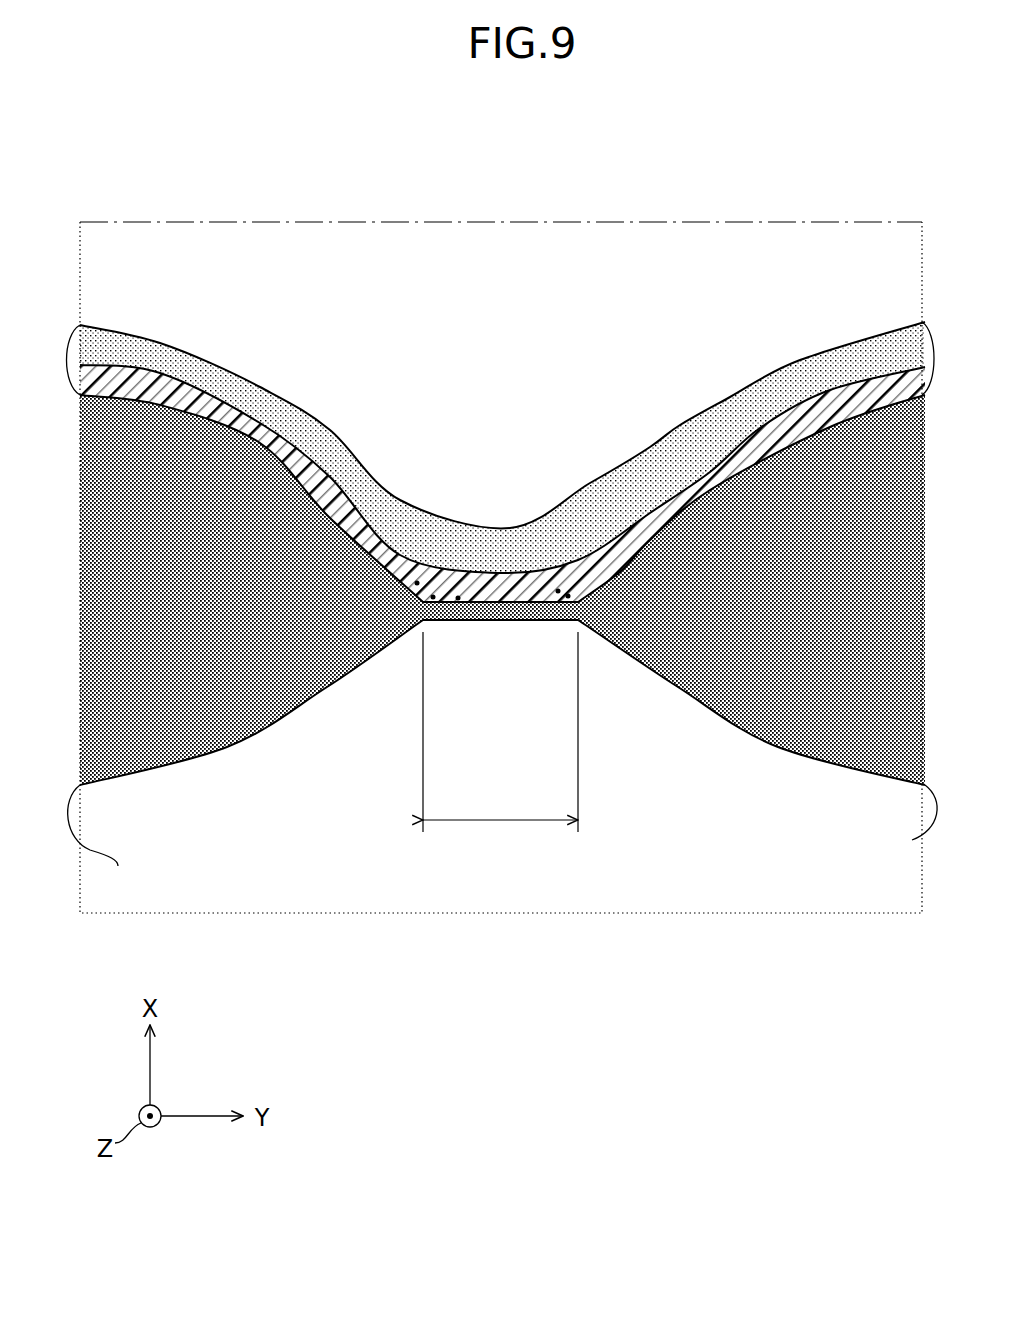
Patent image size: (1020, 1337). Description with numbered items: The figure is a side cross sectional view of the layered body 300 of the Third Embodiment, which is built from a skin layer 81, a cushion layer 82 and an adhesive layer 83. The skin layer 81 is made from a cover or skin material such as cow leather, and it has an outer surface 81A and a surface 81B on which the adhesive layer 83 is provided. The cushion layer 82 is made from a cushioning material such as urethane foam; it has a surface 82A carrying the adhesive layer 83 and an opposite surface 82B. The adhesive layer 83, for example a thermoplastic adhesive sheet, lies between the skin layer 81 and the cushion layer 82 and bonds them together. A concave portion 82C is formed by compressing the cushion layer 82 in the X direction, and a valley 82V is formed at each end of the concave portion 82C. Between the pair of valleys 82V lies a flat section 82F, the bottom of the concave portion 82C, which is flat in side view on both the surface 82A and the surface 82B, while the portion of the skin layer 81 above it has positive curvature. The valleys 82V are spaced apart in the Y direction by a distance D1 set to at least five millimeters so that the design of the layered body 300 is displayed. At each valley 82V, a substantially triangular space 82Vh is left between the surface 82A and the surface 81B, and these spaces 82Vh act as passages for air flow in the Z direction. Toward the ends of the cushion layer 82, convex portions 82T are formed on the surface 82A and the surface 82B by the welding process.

The layered body 300 is at (508, 352).
The skin layer 81 is at (333, 455).
The outer surface of first member 81A is at (803, 357).
The surface of the skin layer 81B is at (760, 425).
The cushion layer 82 is at (314, 650).
The surface of the cushion layer 82A is at (268, 448).
The surface of the cushion layer opposite to surface 82A 82B is at (232, 745).
The concave portion 82C is at (417, 583).
The flat section 82F is at (470, 602).
The convex portion 82T is at (103, 328).
The valley 82V is at (433, 597).
The space 82Vh is at (458, 598).
The adhesive layer 83 is at (650, 510).
The distance between the valleys D1 is at (500, 840).